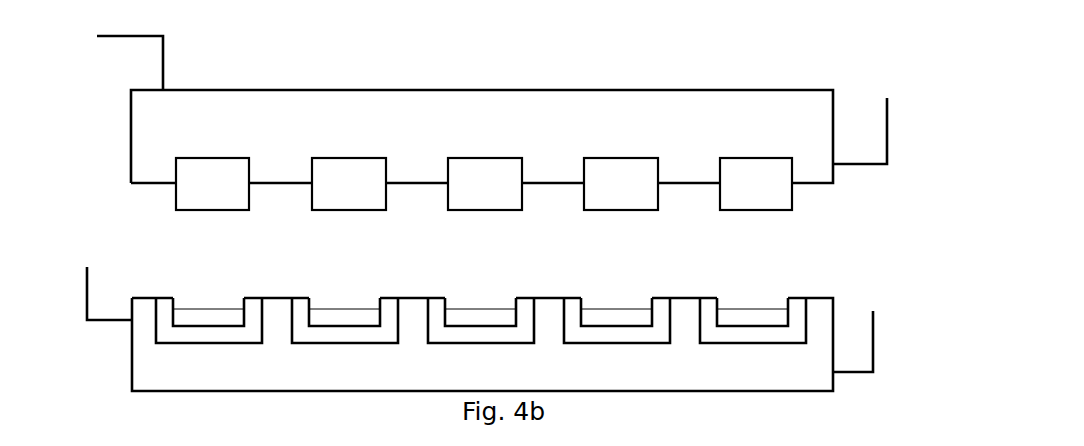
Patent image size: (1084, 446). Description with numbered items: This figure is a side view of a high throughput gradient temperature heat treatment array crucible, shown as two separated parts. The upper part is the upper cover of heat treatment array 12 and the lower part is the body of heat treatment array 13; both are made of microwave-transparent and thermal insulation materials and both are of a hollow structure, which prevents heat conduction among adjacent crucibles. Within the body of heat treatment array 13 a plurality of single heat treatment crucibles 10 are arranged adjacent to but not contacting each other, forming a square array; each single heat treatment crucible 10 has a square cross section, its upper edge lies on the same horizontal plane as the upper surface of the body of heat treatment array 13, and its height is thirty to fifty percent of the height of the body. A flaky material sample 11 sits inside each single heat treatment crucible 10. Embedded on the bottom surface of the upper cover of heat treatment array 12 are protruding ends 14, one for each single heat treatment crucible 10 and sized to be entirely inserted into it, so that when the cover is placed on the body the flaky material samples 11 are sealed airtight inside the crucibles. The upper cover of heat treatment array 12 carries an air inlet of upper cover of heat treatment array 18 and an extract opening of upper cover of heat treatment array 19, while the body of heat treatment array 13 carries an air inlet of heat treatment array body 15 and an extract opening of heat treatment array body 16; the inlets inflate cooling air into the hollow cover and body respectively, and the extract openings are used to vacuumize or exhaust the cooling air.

The single heat treatment crucible 10 is at (163, 320).
The flaky material sample 11 is at (327, 319).
The upper cover of heat treatment array 12 is at (527, 117).
The body of heat treatment array 13 is at (815, 310).
The protruding end 14 is at (772, 197).
The air inlet of heat treatment array body 15 is at (90, 292).
The extract opening of heat treatment array body 16 is at (875, 347).
The air inlet of upper cover of heat treatment array 18 is at (116, 37).
The extract opening of upper cover of heat treatment array 19 is at (885, 138).